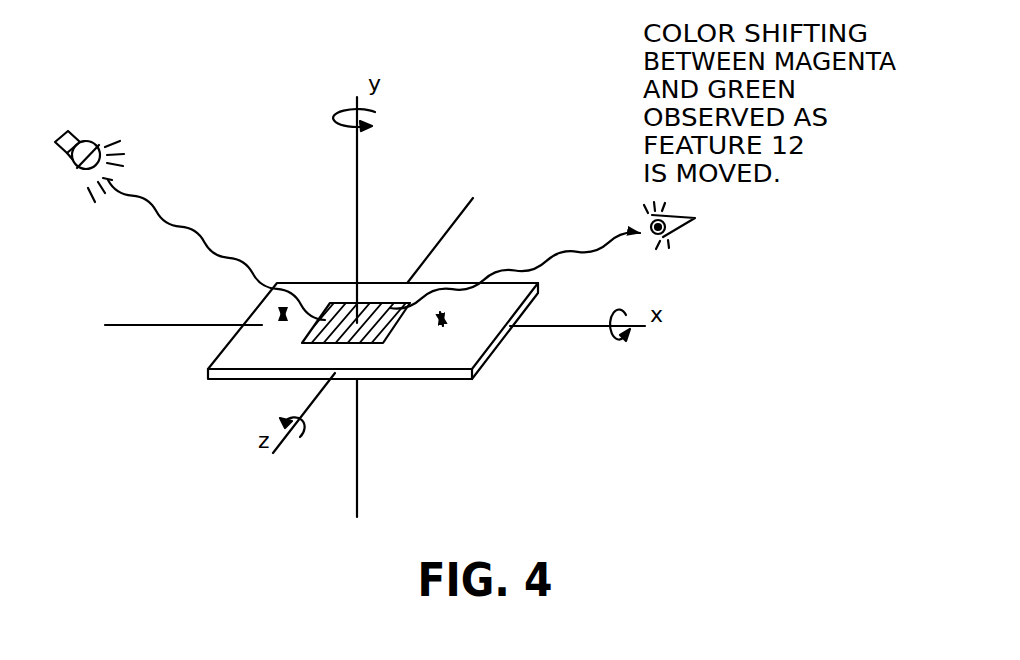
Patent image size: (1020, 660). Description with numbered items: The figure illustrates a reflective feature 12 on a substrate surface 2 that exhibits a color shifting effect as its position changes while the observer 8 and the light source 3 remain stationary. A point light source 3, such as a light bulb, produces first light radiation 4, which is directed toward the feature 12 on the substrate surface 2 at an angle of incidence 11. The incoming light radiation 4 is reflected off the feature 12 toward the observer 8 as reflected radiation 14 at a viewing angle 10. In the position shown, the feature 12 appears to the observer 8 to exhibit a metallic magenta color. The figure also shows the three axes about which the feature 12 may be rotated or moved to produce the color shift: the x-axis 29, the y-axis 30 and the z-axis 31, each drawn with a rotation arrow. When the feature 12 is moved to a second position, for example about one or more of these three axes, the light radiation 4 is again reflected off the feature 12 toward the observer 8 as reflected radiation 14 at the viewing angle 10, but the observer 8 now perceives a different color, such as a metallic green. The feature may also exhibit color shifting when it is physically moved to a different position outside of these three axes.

The substrate surface 2 is at (250, 353).
The light source 3 is at (68, 130).
The first light radiation 4 is at (185, 233).
The observer 8 is at (698, 246).
The viewing angle 10 is at (447, 318).
The angle of incidence 11 is at (280, 312).
The feature 12 is at (343, 312).
The reflected radiation 14 is at (592, 258).
The x-axis 29 is at (560, 328).
The y-axis 30 is at (358, 222).
The z-axis 31 is at (281, 450).